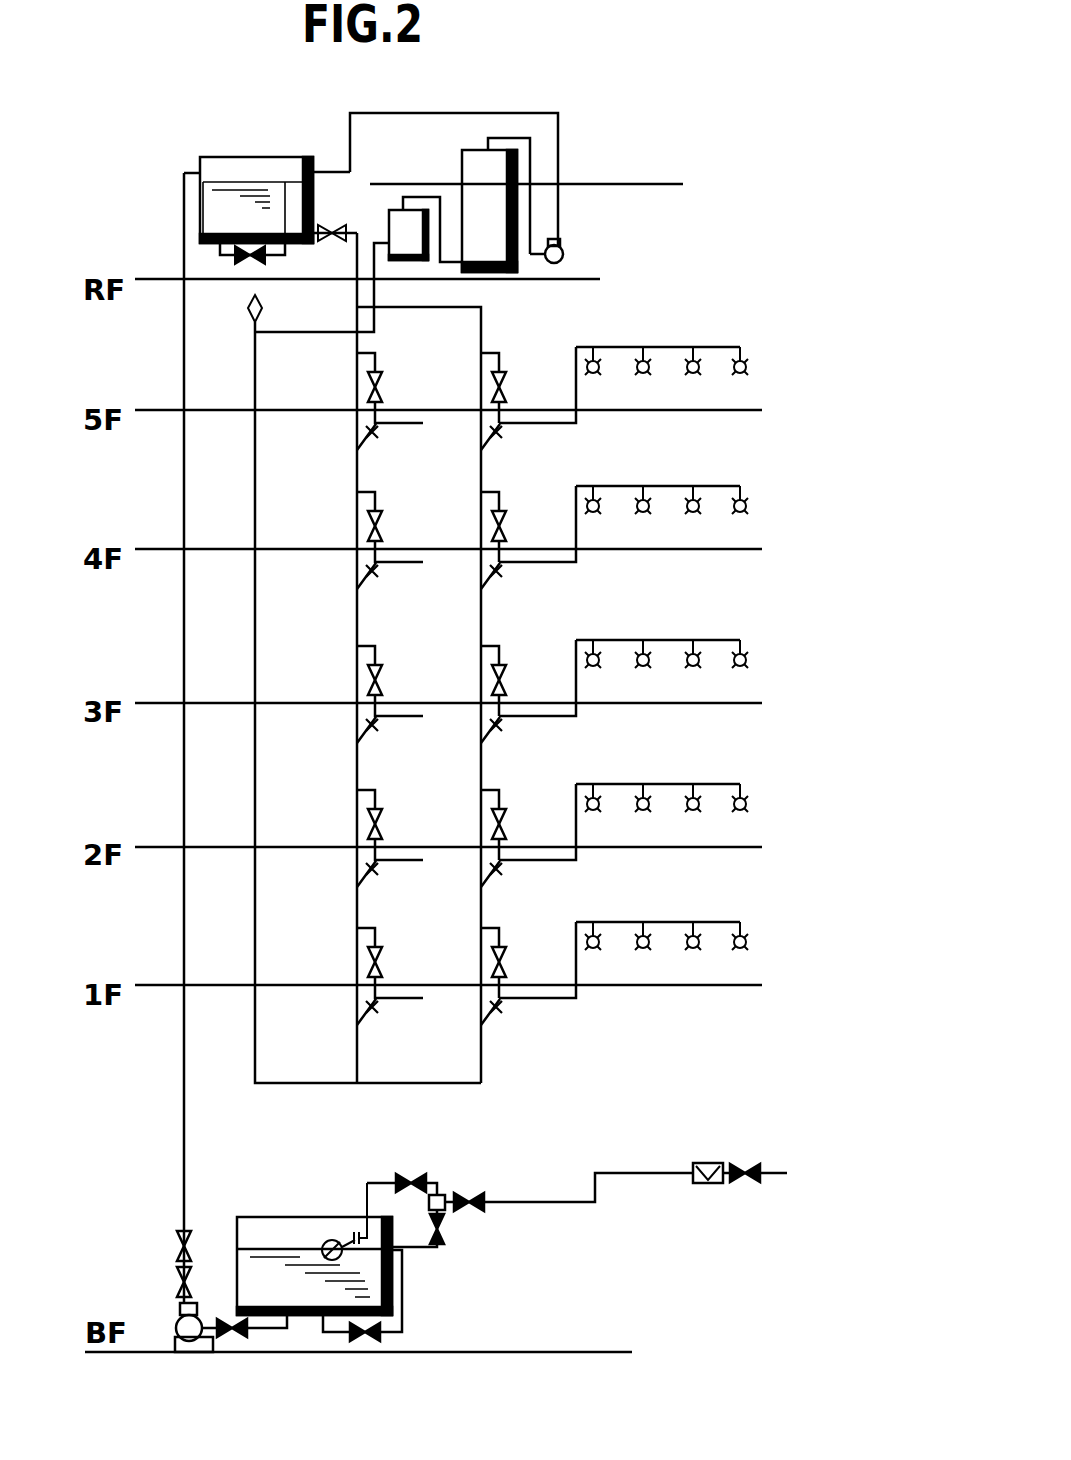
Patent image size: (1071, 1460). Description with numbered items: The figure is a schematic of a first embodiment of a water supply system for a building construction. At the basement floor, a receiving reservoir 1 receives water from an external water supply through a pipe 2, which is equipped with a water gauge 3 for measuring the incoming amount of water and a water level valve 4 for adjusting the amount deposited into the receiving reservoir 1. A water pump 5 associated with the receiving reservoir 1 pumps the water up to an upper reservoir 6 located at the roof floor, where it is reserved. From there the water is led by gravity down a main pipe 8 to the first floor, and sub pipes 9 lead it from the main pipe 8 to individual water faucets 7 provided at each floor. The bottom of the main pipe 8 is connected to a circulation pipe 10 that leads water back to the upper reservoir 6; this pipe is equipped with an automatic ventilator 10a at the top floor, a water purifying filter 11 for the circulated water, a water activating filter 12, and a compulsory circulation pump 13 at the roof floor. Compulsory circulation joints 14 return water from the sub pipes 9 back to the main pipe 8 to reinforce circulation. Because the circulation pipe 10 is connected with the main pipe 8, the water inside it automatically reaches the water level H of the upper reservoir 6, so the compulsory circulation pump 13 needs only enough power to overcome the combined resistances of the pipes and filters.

The receiving reservoir 1 is at (392, 1317).
The pipe 2 is at (535, 1203).
The water gauge 3 is at (707, 1185).
The water level valve 4 is at (447, 1205).
The water pump 5 is at (177, 1328).
The upper reservoir 6 is at (230, 170).
The water faucets 7 is at (746, 367).
The main pipe 8 is at (357, 620).
The sub pipes 9 is at (555, 424).
The circulation pipe 10 is at (255, 801).
The automatic ventilator 10a is at (247, 306).
The water purifying filter 11 is at (400, 209).
The water activating filter 12 is at (467, 150).
The compulsory circulation pump 13 is at (562, 257).
The compulsory circulation joints 14 is at (483, 443).
The water level H is at (683, 184).